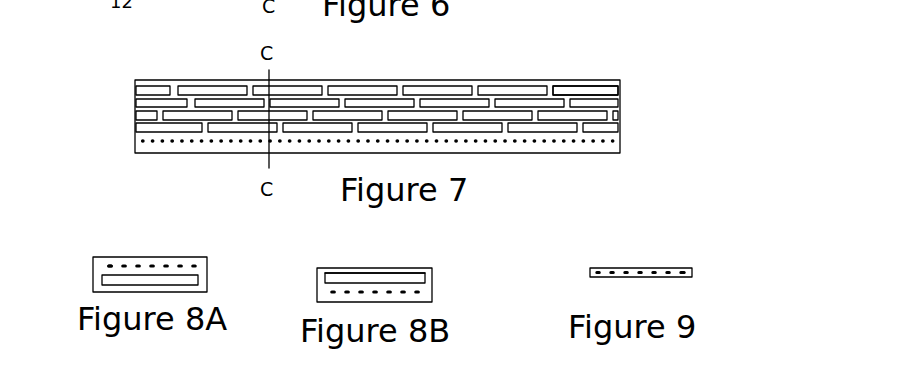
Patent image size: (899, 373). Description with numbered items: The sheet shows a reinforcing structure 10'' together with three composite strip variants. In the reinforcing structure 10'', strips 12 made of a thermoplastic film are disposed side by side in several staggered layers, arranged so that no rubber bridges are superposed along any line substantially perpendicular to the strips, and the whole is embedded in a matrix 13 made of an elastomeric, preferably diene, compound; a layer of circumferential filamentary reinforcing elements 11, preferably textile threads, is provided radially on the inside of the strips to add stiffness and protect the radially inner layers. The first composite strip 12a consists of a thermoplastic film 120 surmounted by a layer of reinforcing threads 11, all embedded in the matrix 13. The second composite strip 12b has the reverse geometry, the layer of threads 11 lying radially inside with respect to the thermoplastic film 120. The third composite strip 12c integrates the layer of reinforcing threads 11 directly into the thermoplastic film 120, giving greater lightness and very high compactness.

In FIG. 7, the annular reinforcing structure 10'' is at (431, 105).
In FIG. 7, the circumferential filamentary reinforcing elements 11 is at (480, 142).
In FIG. 8A, the circumferential filamentary reinforcing elements 11 is at (161, 242).
In FIG. 8B, the circumferential filamentary reinforcing elements 11 is at (420, 292).
In FIG. 9, the circumferential filamentary reinforcing elements 11 is at (596, 273).
In FIG. 7, the strips 12 is at (153, 88).
In FIG. 9, the strips 12 is at (683, 274).
In FIG. 8A, the composite strip 12a is at (140, 244).
In FIG. 8B, the composite strip 12b is at (357, 258).
In FIG. 9, the composite strip 12c is at (628, 246).
In FIG. 7, the matrix 13 is at (623, 48).
In FIG. 8A, the matrix 13 is at (78, 254).
In FIG. 8B, the matrix 13 is at (405, 259).
In FIG. 8A, the thermoplastic film 120 is at (115, 283).
In FIG. 8B, the thermoplastic film 120 is at (337, 282).